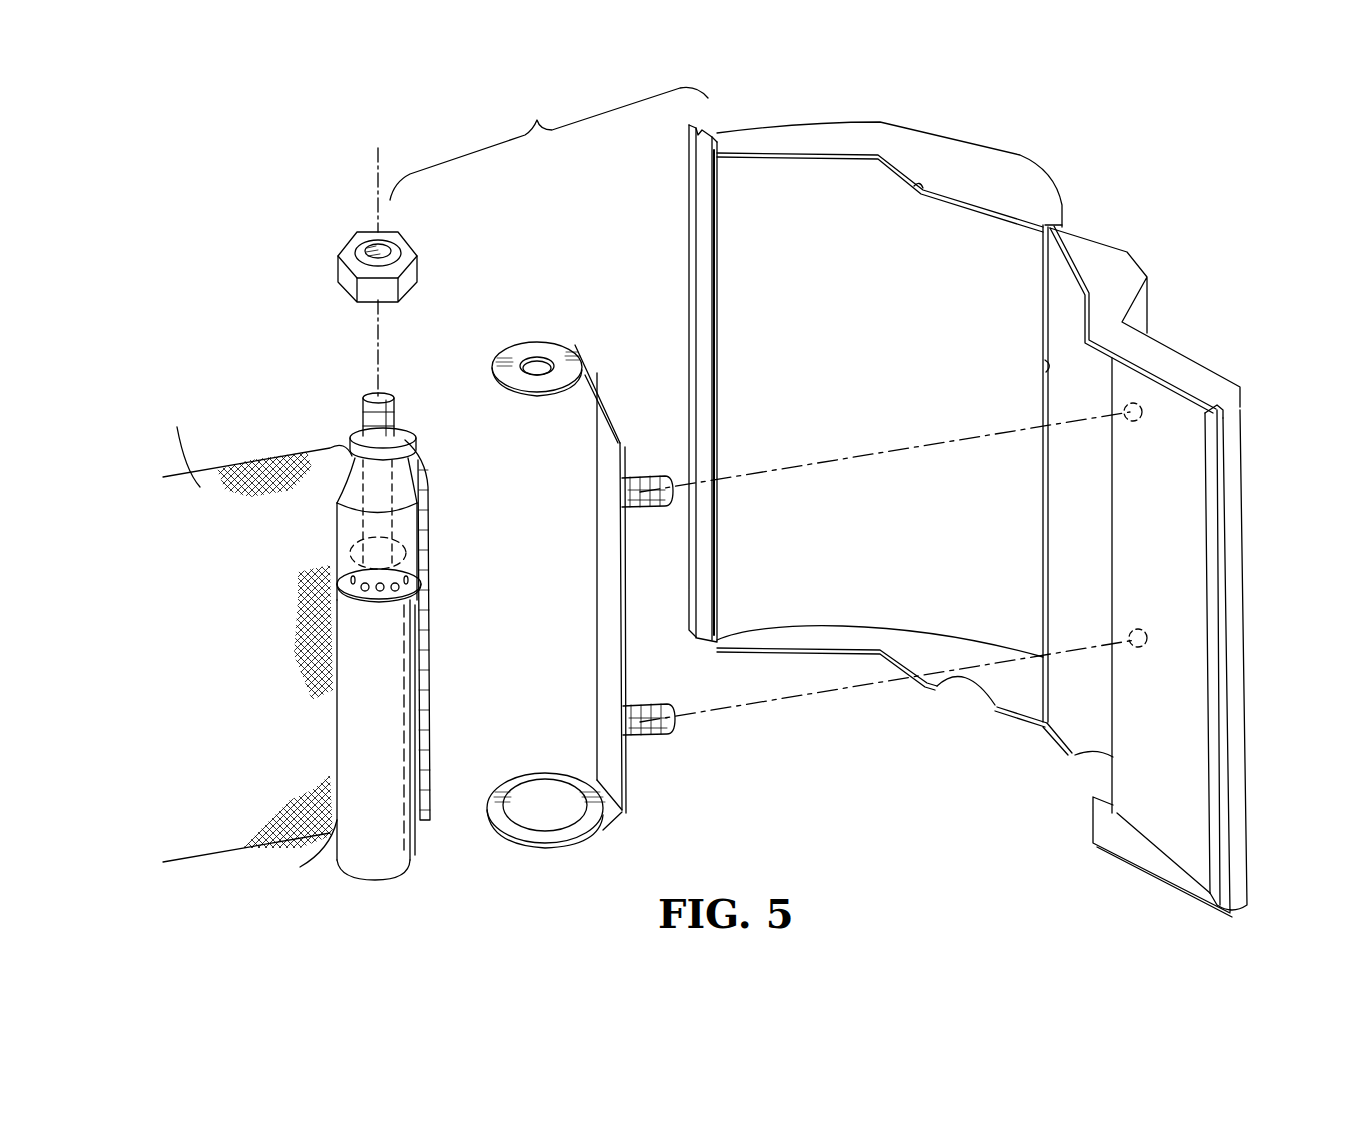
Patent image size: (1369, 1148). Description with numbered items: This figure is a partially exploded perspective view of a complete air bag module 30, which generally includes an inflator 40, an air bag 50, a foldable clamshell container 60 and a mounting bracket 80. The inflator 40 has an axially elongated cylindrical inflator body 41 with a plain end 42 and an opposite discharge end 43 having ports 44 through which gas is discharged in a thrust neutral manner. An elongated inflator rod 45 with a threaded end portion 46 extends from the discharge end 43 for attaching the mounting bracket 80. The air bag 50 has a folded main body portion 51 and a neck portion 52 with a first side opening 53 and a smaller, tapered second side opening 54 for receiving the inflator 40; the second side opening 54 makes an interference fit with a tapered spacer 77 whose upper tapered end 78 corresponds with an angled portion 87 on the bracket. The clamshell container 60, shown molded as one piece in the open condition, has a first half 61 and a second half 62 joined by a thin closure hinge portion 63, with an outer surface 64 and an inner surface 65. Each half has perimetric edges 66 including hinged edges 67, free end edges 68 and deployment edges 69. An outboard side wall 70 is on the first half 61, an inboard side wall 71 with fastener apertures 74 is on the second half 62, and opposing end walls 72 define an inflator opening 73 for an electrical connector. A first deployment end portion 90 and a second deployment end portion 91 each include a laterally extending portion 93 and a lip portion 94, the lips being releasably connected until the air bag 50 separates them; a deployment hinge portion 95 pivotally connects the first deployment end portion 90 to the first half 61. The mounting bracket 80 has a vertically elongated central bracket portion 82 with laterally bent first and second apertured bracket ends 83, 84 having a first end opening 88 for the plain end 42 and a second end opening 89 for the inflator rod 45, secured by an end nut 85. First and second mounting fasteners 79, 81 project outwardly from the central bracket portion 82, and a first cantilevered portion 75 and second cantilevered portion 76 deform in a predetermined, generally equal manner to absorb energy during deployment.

The air bag module 30 is at (530, 115).
The inflator 40 is at (326, 624).
The inflator body 41 is at (357, 755).
The plain end 42 is at (395, 880).
The discharge end 43 is at (412, 607).
The ports 44 is at (395, 592).
The inflator rod 45 is at (370, 392).
The threaded end portion 46 is at (366, 415).
The air bag 50 is at (253, 633).
The main body portion 51 is at (177, 441).
The neck portion 52 is at (420, 418).
The first side opening 53 is at (301, 853).
The second side opening 54 is at (417, 456).
The clamshell container 60 is at (961, 498).
The first half 61 is at (925, 375).
The second half 62 is at (1173, 319).
The closure hinge portion 63 is at (1063, 225).
The outer surface 64 is at (1140, 308).
The inner surface 65 is at (1120, 585).
The perimetric edges 66 is at (1056, 266).
The hinged edges 67 is at (1045, 366).
The free end edges 68 is at (935, 180).
The deployment edges 69 is at (700, 181).
The outboard side wall 70 is at (1025, 150).
The inboard side wall 71 is at (1200, 368).
The end walls 72 is at (942, 140).
The inflator opening 73 is at (942, 690).
The fastener apertures 74 is at (1128, 425).
The first cantilevered portion 75 is at (596, 840).
The second cantilevered portion 76 is at (606, 557).
The spacer 77 is at (335, 535).
The tapered end 78 is at (348, 495).
The first mounting fastener 79 is at (647, 740).
The mounting bracket 80 is at (811, 581).
The second mounting fastener 81 is at (640, 478).
The central bracket portion 82 is at (605, 625).
The first apertured bracket end 83 is at (570, 840).
The second apertured bracket end 84 is at (537, 366).
The end nut 85 is at (356, 246).
The angled portion 87 is at (600, 398).
The first end opening 88 is at (540, 820).
The second end opening 89 is at (540, 372).
The first deployment end portion 90 is at (653, 383).
The second deployment end portion 91 is at (1232, 635).
The laterally extending portion 93 is at (702, 128).
The lip portion 94 is at (695, 132).
The deployment hinge portion 95 is at (712, 223).